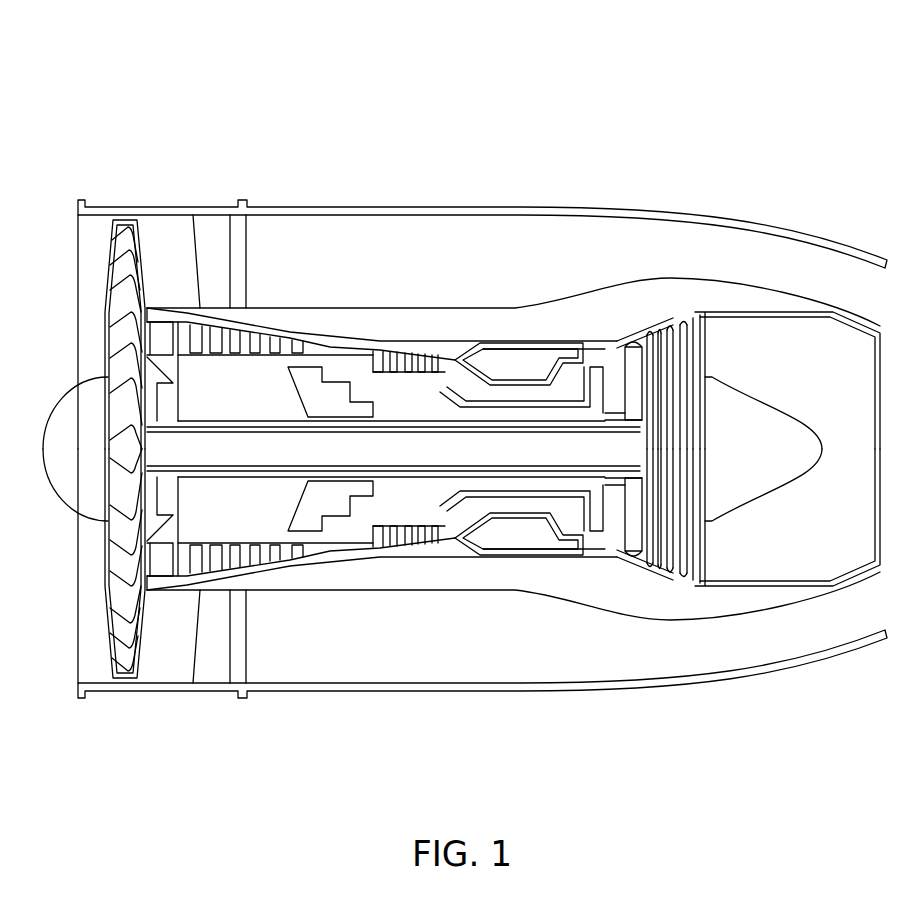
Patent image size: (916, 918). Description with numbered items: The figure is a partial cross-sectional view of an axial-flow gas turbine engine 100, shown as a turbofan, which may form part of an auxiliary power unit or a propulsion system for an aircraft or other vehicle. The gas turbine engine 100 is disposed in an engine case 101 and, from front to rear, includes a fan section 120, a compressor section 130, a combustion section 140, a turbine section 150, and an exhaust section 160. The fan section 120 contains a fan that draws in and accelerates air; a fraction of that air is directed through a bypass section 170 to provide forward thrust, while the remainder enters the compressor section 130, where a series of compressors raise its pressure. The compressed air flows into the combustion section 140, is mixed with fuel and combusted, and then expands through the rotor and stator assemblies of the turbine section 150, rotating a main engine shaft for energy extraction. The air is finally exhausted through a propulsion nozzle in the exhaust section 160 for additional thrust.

The gas turbine engine 100 is at (298, 108).
The engine case 101 is at (308, 205).
The bypass section 170 is at (409, 230).
The fan section 120 is at (158, 725).
The compressor section 130 is at (158, 725).
The combustion section 140 is at (557, 725).
The turbine section 150 is at (710, 725).
The exhaust section 160 is at (710, 725).